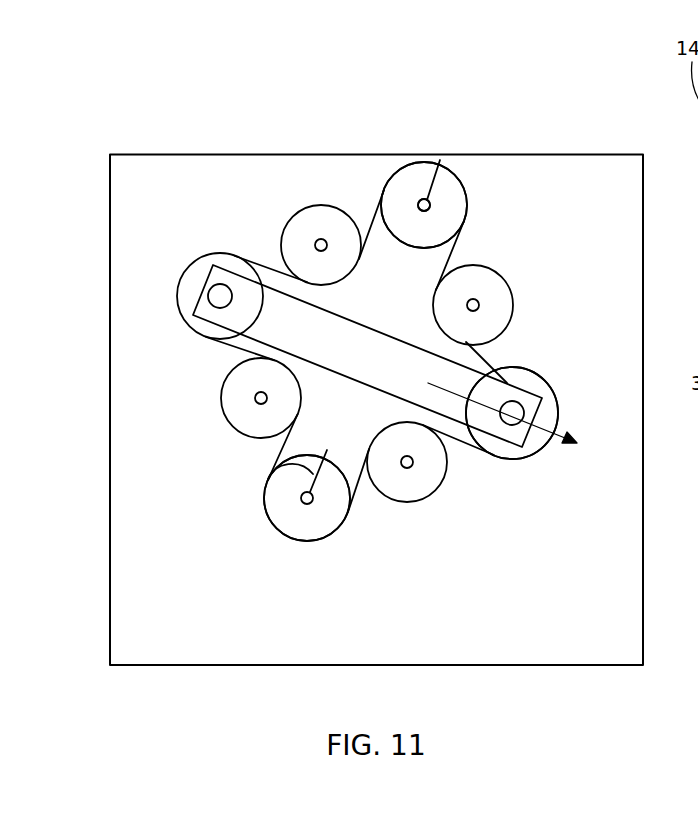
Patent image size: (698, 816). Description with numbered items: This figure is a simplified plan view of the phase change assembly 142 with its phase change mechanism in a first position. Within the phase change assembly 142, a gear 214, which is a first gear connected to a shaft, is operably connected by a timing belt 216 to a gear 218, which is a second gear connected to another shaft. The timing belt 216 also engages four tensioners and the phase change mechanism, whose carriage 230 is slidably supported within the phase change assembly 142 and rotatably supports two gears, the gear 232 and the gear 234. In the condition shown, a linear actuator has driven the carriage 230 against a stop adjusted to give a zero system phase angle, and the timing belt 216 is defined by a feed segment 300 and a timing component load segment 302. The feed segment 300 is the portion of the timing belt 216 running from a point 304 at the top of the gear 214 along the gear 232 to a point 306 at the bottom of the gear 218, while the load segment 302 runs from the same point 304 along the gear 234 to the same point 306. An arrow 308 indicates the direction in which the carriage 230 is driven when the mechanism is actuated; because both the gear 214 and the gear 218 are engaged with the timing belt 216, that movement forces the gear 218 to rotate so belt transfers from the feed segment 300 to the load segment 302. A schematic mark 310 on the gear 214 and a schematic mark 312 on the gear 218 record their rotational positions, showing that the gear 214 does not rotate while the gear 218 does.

The phase change assembly 142 is at (101, 152).
The feed segment 300 is at (180, 385).
The timing component load segment 302 is at (553, 478).
The point at the top of the gear 214 304 is at (433, 167).
The point at the bottom of the gear 218 306 is at (287, 540).
The arrow 308 is at (463, 420).
The schematic mark 310 is at (425, 192).
The schematic mark 312 is at (268, 479).
The gear 214 is at (465, 195).
The timing belt 216 is at (458, 253).
The gear 218 is at (323, 537).
The carriage 230 is at (480, 372).
The gear 232 is at (189, 270).
The gear 234 is at (553, 395).